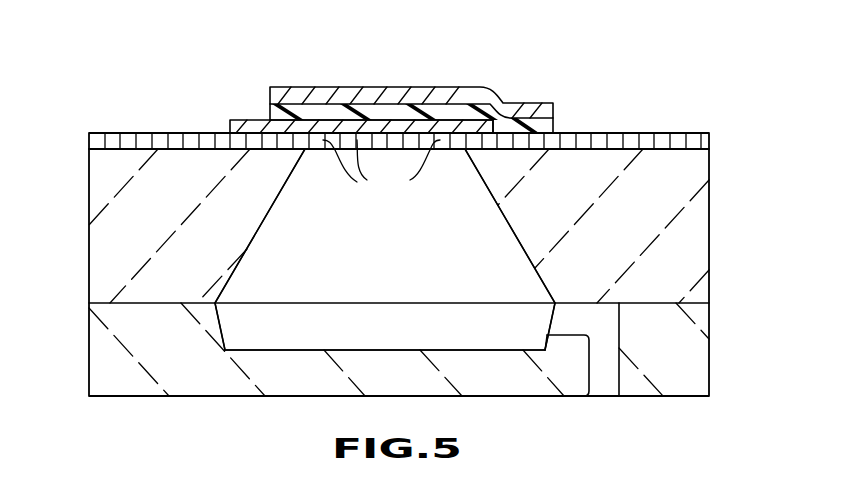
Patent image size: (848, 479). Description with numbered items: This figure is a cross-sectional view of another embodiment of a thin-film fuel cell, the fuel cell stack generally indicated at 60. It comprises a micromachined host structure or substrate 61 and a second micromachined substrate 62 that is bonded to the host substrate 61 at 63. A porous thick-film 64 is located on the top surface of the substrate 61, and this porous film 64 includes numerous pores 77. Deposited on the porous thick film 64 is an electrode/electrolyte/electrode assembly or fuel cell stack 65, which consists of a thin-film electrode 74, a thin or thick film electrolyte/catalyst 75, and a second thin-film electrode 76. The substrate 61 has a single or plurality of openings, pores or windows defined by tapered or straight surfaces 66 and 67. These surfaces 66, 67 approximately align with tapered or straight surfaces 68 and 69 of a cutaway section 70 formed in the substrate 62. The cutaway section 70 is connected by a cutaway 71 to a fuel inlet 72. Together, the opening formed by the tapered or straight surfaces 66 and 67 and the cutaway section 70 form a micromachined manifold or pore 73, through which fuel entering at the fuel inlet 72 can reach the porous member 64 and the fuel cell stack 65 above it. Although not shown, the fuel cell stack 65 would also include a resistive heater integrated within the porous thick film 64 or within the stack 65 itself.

The fuel cell stack 60 is at (566, 73).
The substrate 61 is at (710, 205).
The substrate 62 is at (709, 343).
The bond 63 is at (89, 303).
The porous thick-film 64 is at (133, 133).
The fuel cell stack 65 is at (375, 69).
The tapered or straight surface 66 is at (277, 205).
The tapered or straight surface 67 is at (507, 225).
The tapered or straight surface 68 is at (225, 333).
The tapered or straight surface 69 is at (543, 347).
The cutaway section 70 is at (392, 318).
The cutaway 71 is at (567, 317).
The fuel inlet 72 is at (603, 382).
The micromachined manifold or pore 73 is at (395, 253).
The thin-film electrode 74 is at (240, 120).
The electrolyte/catalyst 75 is at (270, 117).
The thin-film electrode 76 is at (465, 87).
The pores 77 is at (381, 169).